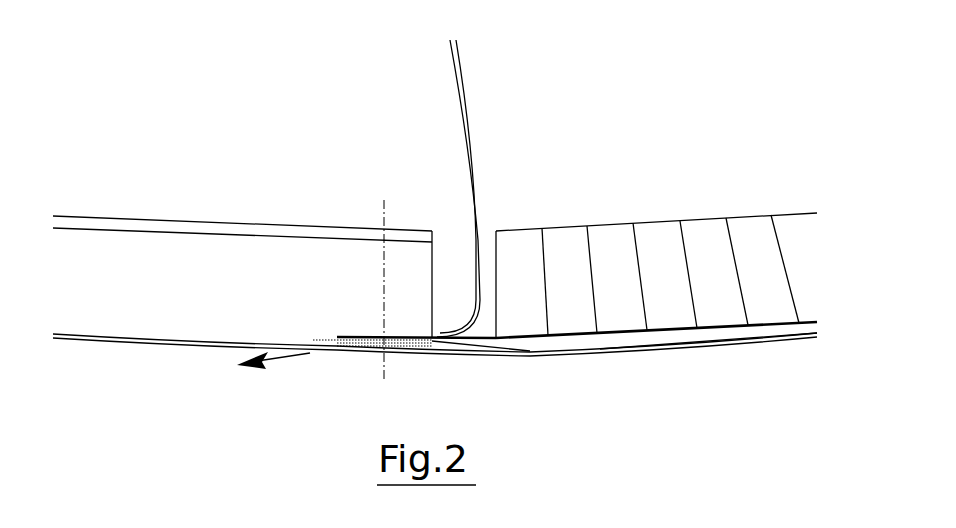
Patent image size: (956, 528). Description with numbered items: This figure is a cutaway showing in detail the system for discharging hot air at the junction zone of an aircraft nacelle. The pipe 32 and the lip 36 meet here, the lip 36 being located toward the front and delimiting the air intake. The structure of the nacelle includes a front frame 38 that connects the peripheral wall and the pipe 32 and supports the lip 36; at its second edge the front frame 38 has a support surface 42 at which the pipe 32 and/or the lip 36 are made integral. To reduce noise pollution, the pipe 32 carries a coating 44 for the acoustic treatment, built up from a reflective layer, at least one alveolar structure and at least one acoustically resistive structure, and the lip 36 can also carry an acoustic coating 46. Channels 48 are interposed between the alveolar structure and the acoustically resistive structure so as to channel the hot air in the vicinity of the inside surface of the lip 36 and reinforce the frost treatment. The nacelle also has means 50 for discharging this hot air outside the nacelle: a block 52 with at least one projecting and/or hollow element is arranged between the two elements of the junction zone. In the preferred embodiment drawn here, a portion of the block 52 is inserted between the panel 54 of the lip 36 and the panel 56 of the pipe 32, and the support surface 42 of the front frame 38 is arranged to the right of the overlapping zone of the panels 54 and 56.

The pipe 32 is at (195, 350).
The lip 36 is at (728, 342).
The front frame 38 is at (477, 148).
The support surface 42 is at (440, 335).
The coating for the acoustic treatment 44 is at (193, 253).
The acoustic coating 46 is at (698, 235).
The channels 48 is at (637, 345).
The discharge means 50 is at (281, 392).
The block 52 is at (305, 338).
The panel of the lip 54 is at (430, 352).
The panel of the pipe 56 is at (330, 338).